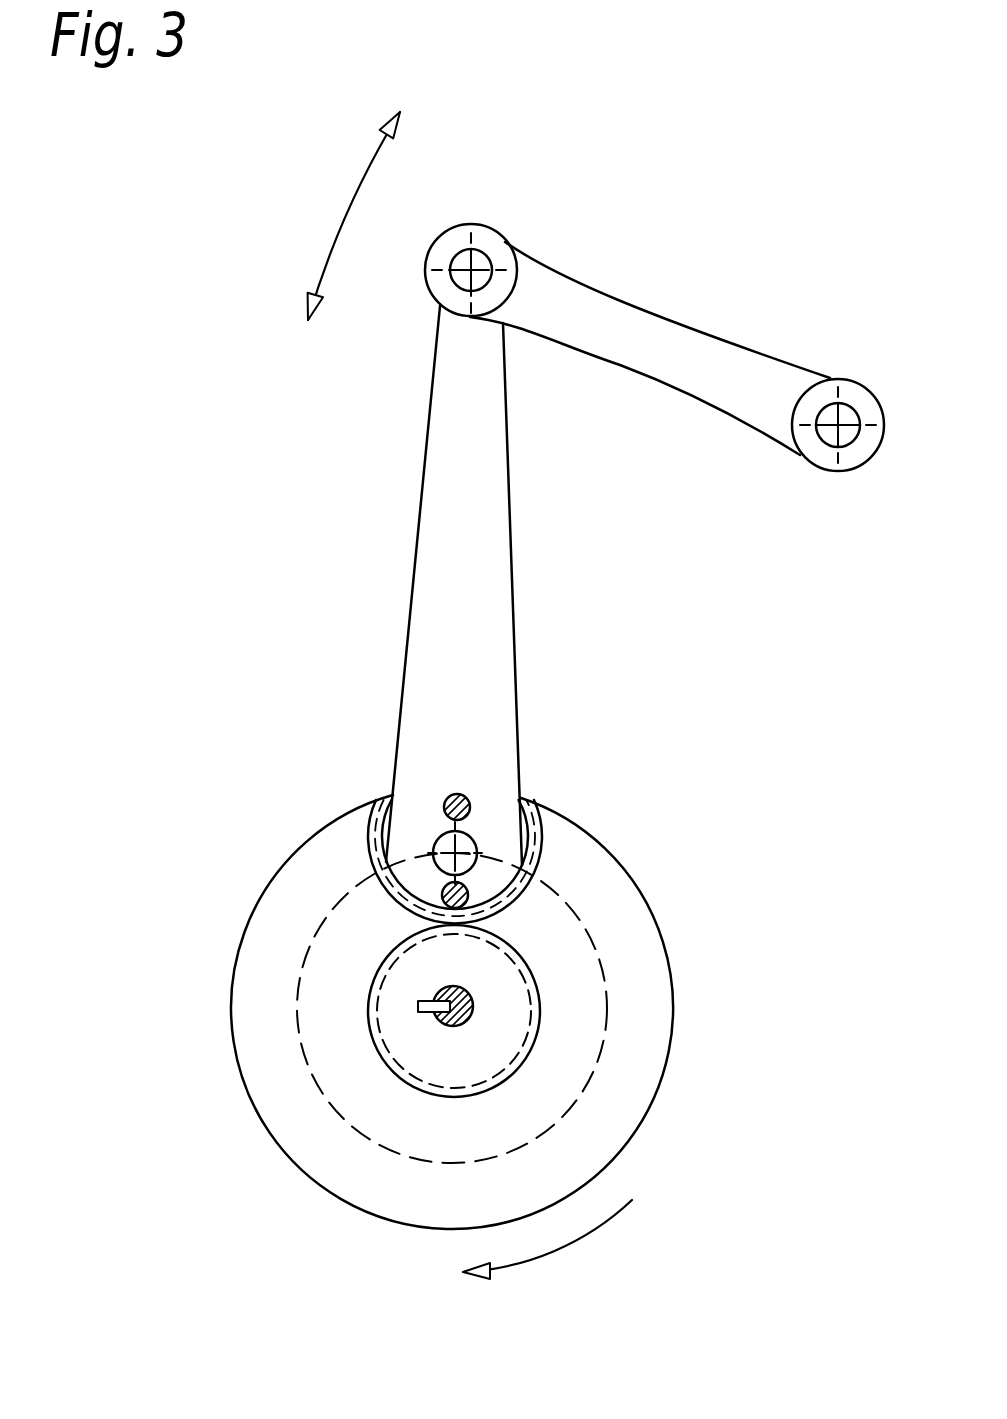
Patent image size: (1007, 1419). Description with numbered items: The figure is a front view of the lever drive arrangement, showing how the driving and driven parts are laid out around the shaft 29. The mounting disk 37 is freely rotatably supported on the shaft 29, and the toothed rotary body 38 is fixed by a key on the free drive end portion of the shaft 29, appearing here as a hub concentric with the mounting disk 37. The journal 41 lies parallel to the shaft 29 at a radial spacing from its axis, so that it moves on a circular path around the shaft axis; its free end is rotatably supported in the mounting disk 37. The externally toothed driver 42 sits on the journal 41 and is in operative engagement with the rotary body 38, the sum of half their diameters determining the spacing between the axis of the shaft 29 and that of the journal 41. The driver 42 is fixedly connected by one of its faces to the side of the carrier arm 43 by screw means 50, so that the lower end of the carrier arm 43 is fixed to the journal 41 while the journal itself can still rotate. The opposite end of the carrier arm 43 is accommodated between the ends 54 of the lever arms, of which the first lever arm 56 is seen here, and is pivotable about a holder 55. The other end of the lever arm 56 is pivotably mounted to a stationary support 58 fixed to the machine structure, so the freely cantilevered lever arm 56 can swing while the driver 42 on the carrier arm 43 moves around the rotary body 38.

The shaft 29 is at (455, 1027).
The mounting disk 37 is at (623, 973).
The rotary body 38 is at (515, 1023).
The journal 41 is at (463, 845).
The driver 42 is at (538, 890).
The carrier arm 43 is at (477, 662).
The screw means 50 is at (443, 797).
The ends of the lever arms 54 is at (418, 277).
The holder 55 is at (480, 266).
The first lever arm 56 is at (642, 338).
The stationary support 58 is at (848, 437).